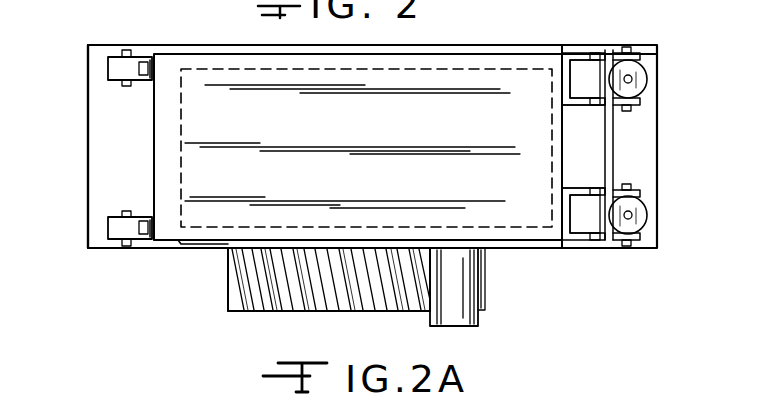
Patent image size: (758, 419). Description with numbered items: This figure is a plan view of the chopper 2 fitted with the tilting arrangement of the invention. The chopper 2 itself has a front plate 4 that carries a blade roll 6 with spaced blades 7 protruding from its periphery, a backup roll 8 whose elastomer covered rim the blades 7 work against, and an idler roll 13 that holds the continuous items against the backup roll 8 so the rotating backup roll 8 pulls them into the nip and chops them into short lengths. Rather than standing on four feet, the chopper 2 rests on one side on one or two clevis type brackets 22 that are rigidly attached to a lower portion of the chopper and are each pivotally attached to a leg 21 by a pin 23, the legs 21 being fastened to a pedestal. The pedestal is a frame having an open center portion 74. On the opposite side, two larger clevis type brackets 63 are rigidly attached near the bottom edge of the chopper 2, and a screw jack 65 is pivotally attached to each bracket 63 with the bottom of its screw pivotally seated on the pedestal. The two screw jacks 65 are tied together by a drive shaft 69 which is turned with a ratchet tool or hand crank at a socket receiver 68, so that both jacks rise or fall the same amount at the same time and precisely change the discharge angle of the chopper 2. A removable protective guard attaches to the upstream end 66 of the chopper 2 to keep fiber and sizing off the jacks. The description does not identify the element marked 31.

The chopper 2 is at (452, 52).
The front plate 4 is at (178, 247).
The blade roll 6 is at (397, 313).
The blades 7 is at (320, 313).
The backup roll 8 is at (228, 312).
The idler roll 13 is at (458, 298).
The legs 21 is at (108, 70).
The brackets 22 is at (147, 55).
The pins 23 is at (126, 50).
The side wall 31 is at (105, 110).
The brackets 63 is at (582, 55).
The screw jack 65 is at (638, 80).
The upstream end 66 is at (570, 150).
The socket receiver 68 is at (155, 122).
The drive shaft 69 is at (612, 140).
The open center portion 74 is at (403, 68).